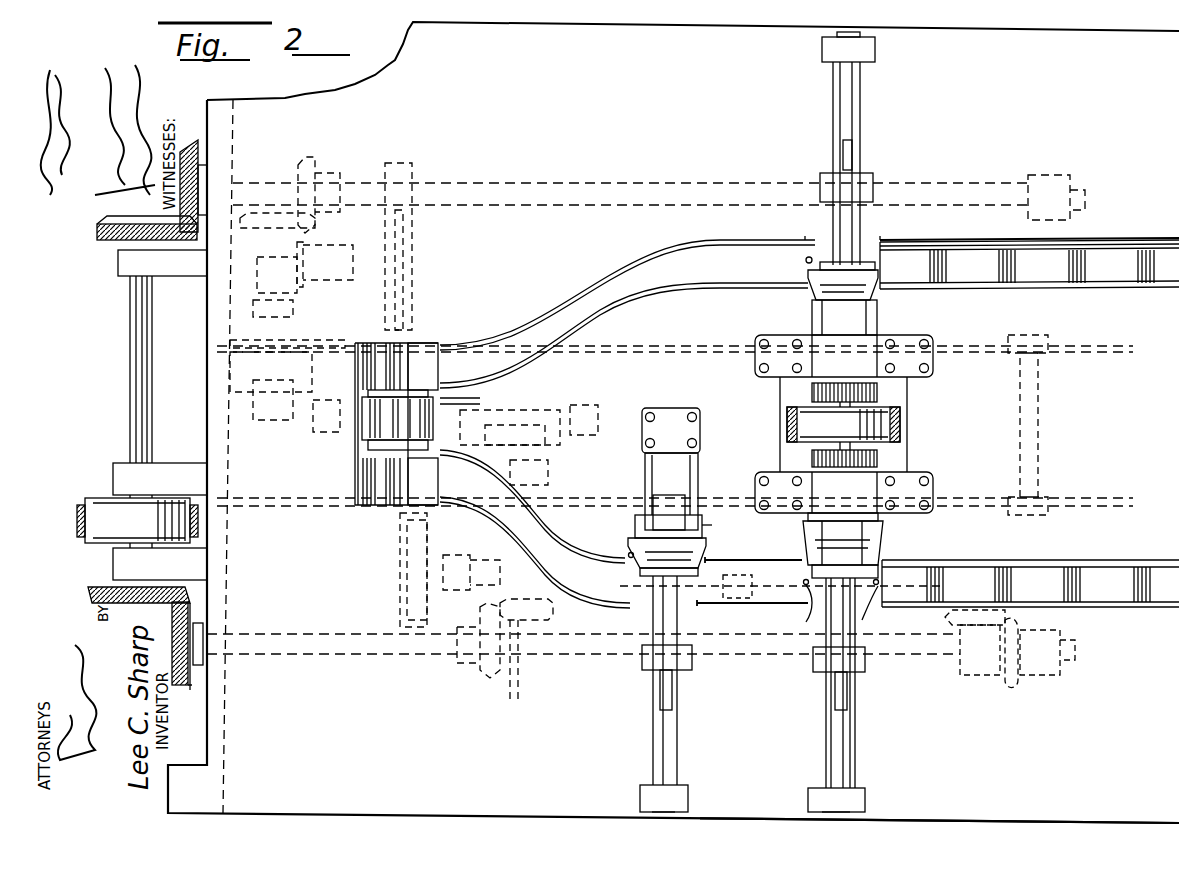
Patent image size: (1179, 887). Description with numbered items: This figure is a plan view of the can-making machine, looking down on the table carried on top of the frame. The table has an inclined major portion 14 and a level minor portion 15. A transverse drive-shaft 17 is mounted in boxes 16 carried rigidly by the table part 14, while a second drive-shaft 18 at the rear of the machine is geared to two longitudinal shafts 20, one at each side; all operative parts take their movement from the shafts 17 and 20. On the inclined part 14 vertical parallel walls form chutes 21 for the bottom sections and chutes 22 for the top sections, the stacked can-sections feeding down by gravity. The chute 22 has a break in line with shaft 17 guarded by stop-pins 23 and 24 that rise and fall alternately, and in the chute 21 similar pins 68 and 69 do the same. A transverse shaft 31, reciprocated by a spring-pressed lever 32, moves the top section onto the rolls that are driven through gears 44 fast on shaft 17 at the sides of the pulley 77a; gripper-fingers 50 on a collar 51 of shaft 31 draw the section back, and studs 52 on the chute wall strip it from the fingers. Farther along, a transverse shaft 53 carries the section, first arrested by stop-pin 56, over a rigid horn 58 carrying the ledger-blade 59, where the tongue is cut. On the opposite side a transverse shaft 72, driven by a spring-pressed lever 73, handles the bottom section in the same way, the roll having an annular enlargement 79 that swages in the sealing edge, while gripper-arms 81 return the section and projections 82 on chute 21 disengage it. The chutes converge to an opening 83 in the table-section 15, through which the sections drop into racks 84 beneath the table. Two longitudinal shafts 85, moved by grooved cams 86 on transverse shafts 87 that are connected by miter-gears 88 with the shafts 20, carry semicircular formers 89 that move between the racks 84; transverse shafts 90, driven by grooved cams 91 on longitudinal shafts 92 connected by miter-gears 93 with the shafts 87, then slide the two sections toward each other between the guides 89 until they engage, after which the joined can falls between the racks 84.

The inclined major portion of the table 14 is at (939, 778).
The horizontal minor portion of the table 15 is at (673, 422).
The boxes 16 is at (844, 424).
The transverse drive-shaft 17 is at (900, 447).
The drive-shaft 18 is at (146, 372).
The longitudinal shafts 20 is at (648, 195).
The chutes 21 is at (622, 262).
The chutes 22 is at (566, 548).
The stop-pin 23 is at (868, 611).
The stop-pin 24 is at (814, 611).
The transverse shaft 31 is at (838, 737).
The spring-pressed lever 32 is at (838, 690).
The gears 44 is at (880, 393).
The spring gripper-fingers 50 is at (803, 550).
The collar 51 is at (812, 571).
The studs 52 is at (872, 612).
The transverse shaft 53 is at (668, 740).
The stop-pin 56 is at (630, 560).
The horn 58 is at (671, 469).
The ledger-blade 59 is at (669, 512).
The pin 68 is at (885, 246).
The pin 69 is at (805, 262).
The transverse shaft 72 is at (862, 156).
The spring-pressed lever 73 is at (850, 150).
The pulley 77a is at (862, 423).
The annular enlargement 79 is at (137, 520).
The gripper-arms 81 is at (808, 292).
The projections 82 is at (808, 238).
The opening 83 is at (480, 401).
The racks 84 is at (396, 424).
The plunger-shafts 85 is at (298, 420).
The grooved cams 86 is at (252, 418).
The shafts 87 is at (298, 322).
The miter-gears 88 is at (315, 231).
The guides or formers 89 is at (385, 420).
The transverse shafts 90 is at (412, 278).
The grooved cams 91 is at (405, 300).
The shafts 92 is at (330, 270).
The miter-gears 93 is at (255, 285).